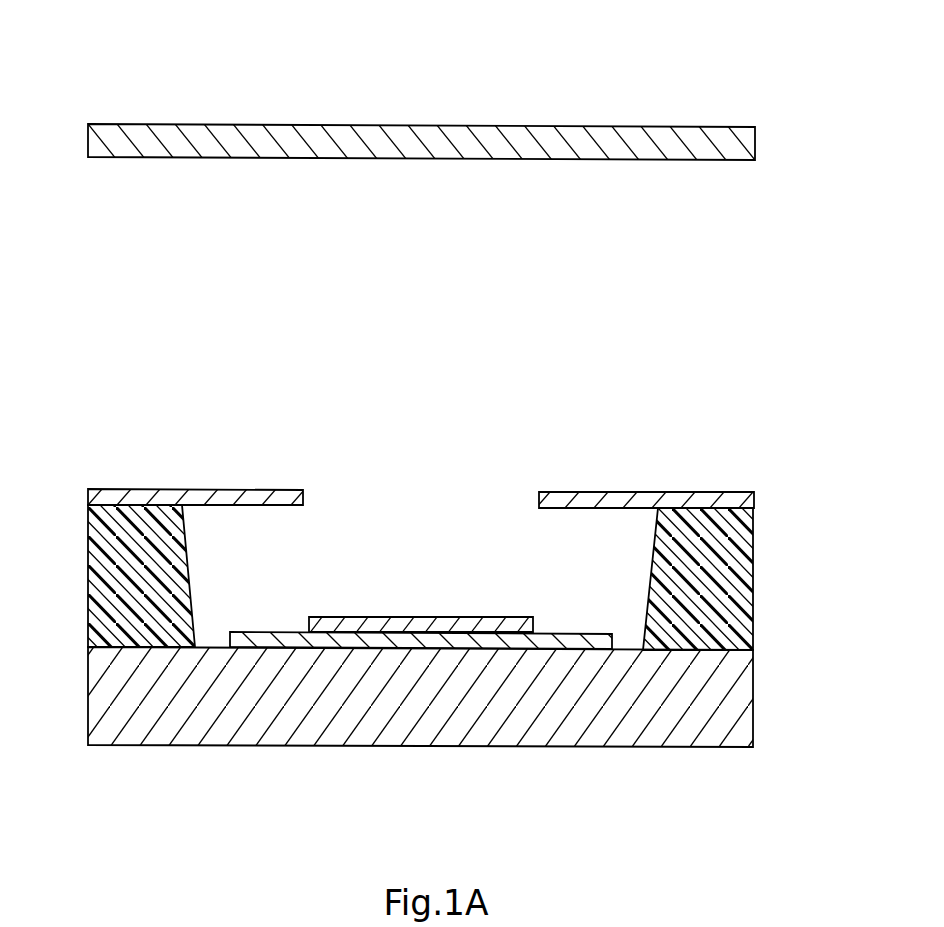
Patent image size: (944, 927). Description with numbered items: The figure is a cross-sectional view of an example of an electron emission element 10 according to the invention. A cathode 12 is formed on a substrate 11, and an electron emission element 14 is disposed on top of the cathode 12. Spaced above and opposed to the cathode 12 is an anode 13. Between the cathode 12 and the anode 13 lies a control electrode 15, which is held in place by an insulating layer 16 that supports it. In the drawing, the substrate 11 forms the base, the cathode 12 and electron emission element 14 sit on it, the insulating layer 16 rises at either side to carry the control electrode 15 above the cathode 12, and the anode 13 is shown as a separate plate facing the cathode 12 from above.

The electron emission element 10 is at (66, 89).
The substrate 11 is at (753, 708).
The cathode 12 is at (498, 642).
The anode 13 is at (755, 149).
The electron emission element 14 is at (420, 617).
The control electrode 15 is at (87, 493).
The insulating layer 16 is at (87, 565).